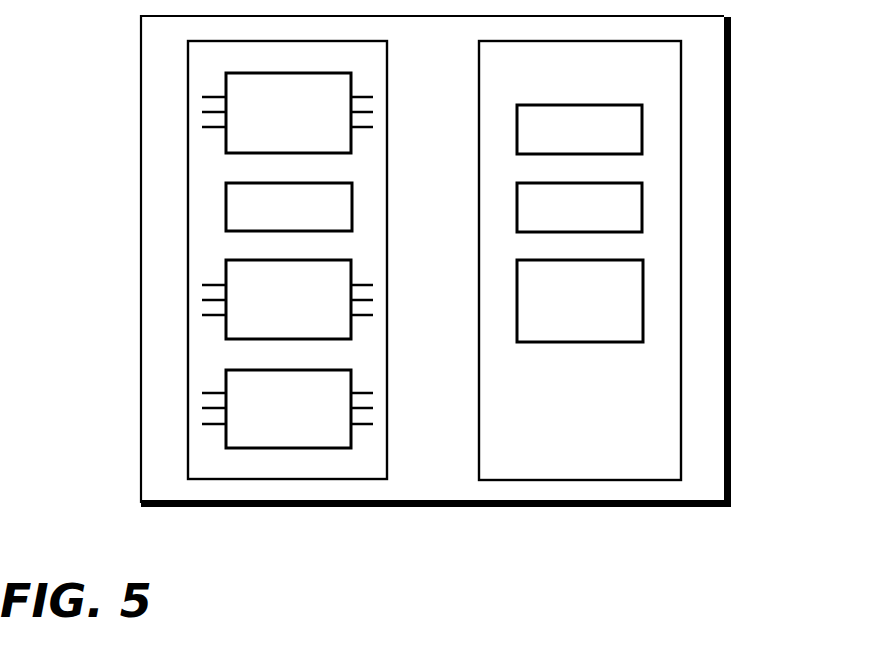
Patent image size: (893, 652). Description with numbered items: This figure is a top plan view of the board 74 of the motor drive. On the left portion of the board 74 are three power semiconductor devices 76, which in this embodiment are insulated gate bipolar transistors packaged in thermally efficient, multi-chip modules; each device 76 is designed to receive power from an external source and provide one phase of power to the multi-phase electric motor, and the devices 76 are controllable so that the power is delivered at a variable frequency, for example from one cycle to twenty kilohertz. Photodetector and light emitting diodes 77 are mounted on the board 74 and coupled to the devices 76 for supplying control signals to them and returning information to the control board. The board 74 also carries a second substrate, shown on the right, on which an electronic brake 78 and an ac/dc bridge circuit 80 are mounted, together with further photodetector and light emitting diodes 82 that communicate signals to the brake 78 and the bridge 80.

The board 74 is at (730, 47).
The power semiconductor device 76 is at (226, 80).
The photodetector and light emitting diodes 77 is at (226, 203).
The electronic brake 78 is at (642, 125).
The ac/dc bridge circuit 80 is at (643, 297).
The photodetector and light emitting diodes 82 is at (642, 203).